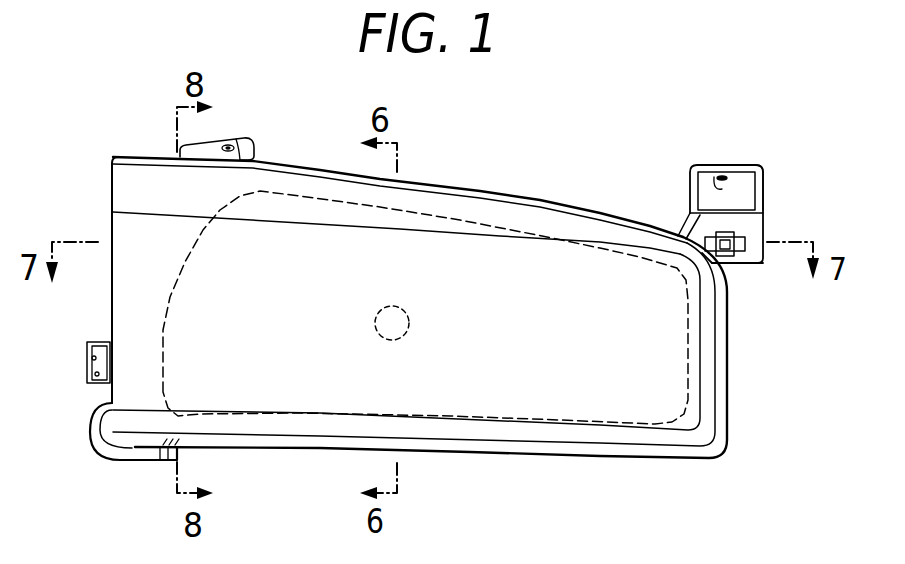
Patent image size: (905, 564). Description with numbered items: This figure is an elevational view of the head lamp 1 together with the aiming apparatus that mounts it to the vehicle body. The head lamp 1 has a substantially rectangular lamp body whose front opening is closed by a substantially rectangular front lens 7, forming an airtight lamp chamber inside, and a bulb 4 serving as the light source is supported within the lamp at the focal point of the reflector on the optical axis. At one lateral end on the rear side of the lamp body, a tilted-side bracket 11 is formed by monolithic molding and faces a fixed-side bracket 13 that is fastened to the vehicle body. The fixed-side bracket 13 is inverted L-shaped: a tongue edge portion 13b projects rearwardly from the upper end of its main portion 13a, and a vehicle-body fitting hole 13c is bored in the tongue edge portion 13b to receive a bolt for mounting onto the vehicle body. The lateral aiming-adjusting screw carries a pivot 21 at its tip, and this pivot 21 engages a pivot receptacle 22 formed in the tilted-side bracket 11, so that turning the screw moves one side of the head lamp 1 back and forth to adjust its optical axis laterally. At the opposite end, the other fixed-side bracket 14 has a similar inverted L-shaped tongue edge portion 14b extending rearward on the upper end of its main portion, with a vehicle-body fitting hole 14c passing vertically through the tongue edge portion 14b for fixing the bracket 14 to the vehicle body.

The head lamp 1 is at (525, 188).
The bulb 4 is at (377, 327).
The front lens 7 is at (640, 398).
The tilted-side bracket 11 is at (742, 263).
The fixed-side bracket 13 is at (740, 146).
The main portion 13a is at (707, 198).
The tongue edge portion 13b is at (757, 168).
The vehicle-body fitting hole 13c is at (717, 183).
The fixed-side bracket 14 is at (276, 136).
The tongue edge portion 14b is at (215, 143).
The vehicle-body fitting hole 14c is at (230, 146).
The pivot 21 is at (747, 244).
The pivot receptacle 22 is at (683, 235).